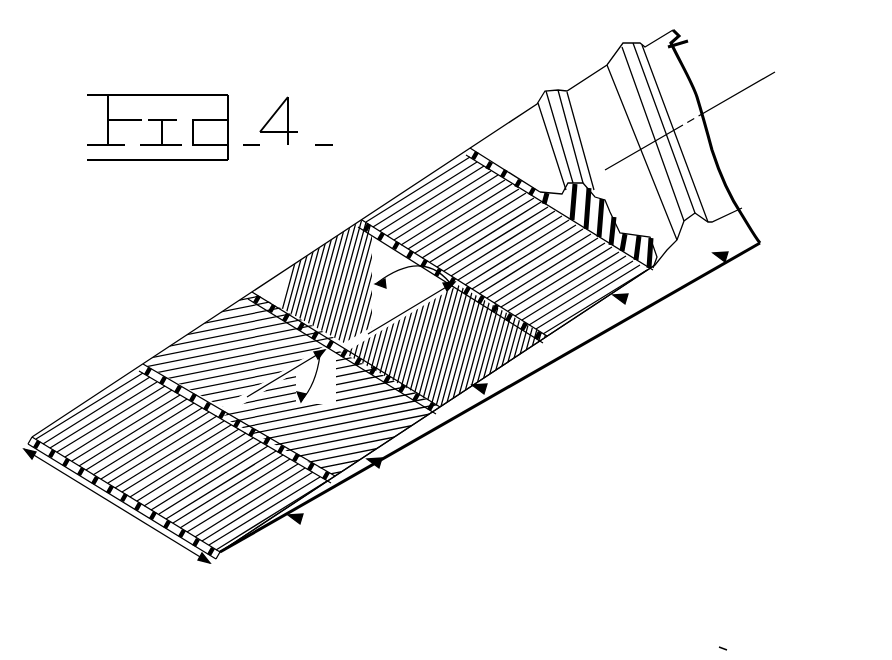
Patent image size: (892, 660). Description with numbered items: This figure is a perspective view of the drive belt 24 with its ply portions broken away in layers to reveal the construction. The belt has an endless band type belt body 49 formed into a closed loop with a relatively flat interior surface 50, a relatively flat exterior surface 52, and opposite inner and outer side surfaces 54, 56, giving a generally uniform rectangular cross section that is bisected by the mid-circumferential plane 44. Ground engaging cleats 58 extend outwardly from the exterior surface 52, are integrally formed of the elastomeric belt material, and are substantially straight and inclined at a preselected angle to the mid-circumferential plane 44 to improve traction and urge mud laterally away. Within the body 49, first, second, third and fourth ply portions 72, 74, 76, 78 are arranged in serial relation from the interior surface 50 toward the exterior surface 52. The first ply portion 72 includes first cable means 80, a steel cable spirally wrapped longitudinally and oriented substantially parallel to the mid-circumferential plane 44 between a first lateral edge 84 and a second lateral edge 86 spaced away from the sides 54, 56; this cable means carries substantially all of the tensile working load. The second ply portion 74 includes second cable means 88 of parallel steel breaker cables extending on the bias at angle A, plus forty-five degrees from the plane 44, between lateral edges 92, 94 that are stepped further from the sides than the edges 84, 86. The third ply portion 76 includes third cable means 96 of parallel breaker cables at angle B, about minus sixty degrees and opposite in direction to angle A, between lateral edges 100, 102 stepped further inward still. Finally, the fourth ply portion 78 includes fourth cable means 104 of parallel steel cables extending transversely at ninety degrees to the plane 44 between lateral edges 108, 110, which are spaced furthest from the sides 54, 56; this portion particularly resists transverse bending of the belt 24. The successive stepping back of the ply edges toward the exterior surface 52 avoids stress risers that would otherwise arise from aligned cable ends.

The drive belt 24 is at (680, 36).
The mid-circumferential plane 44 is at (704, 92).
The belt body 49 is at (729, 258).
The interior surface 50 is at (143, 520).
The exterior surface 52 is at (715, 183).
The inner side surface 54 is at (386, 205).
The outer side surface 56 is at (597, 319).
The cleats 58 is at (547, 90).
The first ply portion 72 is at (302, 519).
The second ply portion 74 is at (381, 466).
The third ply portion 76 is at (487, 391).
The fourth ply portion 78 is at (628, 300).
The first cable means 80 is at (125, 417).
The first lateral edge 84 is at (75, 418).
The second lateral edge 86 is at (241, 532).
The second cable means 88 is at (255, 328).
The lateral edge 92 is at (225, 342).
The lateral edge 94 is at (400, 436).
The third cable means 96 is at (312, 290).
The lateral edge 100 is at (357, 272).
The lateral edge 102 is at (515, 360).
The fourth cable means 104 is at (456, 188).
The lateral edge 108 is at (467, 196).
The lateral edge 110 is at (672, 290).